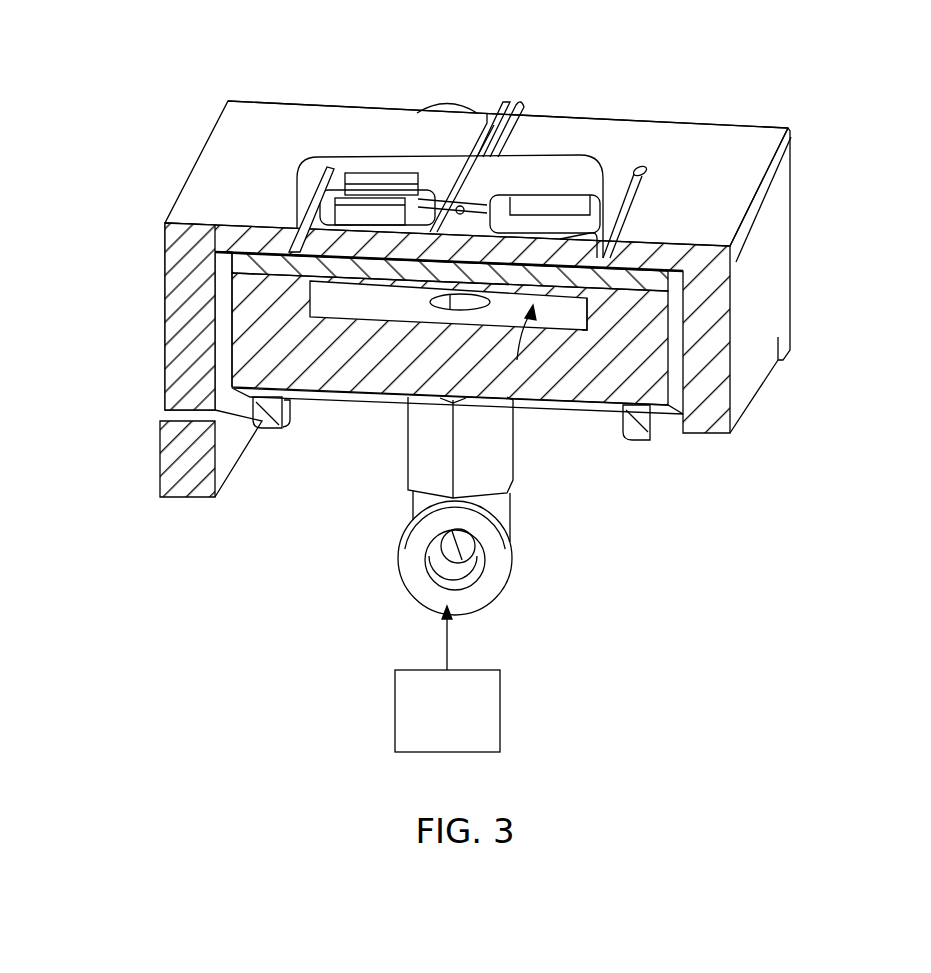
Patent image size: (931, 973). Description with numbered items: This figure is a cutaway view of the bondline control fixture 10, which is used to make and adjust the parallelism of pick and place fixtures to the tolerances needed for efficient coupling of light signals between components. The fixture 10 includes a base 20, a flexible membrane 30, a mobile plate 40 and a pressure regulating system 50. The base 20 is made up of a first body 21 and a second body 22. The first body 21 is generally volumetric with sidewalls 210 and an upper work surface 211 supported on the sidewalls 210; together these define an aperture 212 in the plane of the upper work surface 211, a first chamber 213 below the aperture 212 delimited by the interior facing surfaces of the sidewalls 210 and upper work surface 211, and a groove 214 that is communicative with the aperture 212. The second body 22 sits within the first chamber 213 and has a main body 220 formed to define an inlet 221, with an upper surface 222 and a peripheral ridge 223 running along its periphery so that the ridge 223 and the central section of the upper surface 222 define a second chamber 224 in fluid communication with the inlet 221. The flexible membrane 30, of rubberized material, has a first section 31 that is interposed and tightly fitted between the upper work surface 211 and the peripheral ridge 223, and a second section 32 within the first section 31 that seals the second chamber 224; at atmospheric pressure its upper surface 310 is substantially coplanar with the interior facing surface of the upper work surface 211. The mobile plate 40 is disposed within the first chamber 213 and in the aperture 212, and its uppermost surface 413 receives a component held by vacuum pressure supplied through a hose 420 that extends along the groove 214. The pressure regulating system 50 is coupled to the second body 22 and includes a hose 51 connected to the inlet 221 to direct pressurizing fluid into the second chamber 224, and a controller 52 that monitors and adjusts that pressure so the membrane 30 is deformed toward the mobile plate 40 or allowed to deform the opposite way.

The bondline control fixture 10 is at (152, 78).
The base 20 is at (182, 213).
The first body 21 is at (180, 297).
The second body 22 is at (237, 355).
The flexible membrane 30 is at (235, 272).
The first section 31 is at (243, 233).
The second section 32 is at (560, 152).
The mobile plate 40 is at (438, 172).
The pressure regulating system 50 is at (389, 596).
The hose 51 is at (413, 470).
The controller 52 is at (395, 717).
The sidewalls 210 is at (775, 243).
The upper work surface 211 is at (783, 153).
The aperture 212 is at (648, 167).
The first chamber 213 is at (353, 449).
The groove 214 is at (494, 100).
The main body 220 is at (313, 378).
The inlet 221 is at (443, 309).
The upper surface 222 is at (568, 321).
The peripheral ridge 223 is at (590, 394).
The second chamber 224 is at (520, 344).
The upper surface 310 is at (510, 280).
The uppermost surface 413 is at (542, 190).
The hose 420 is at (519, 98).